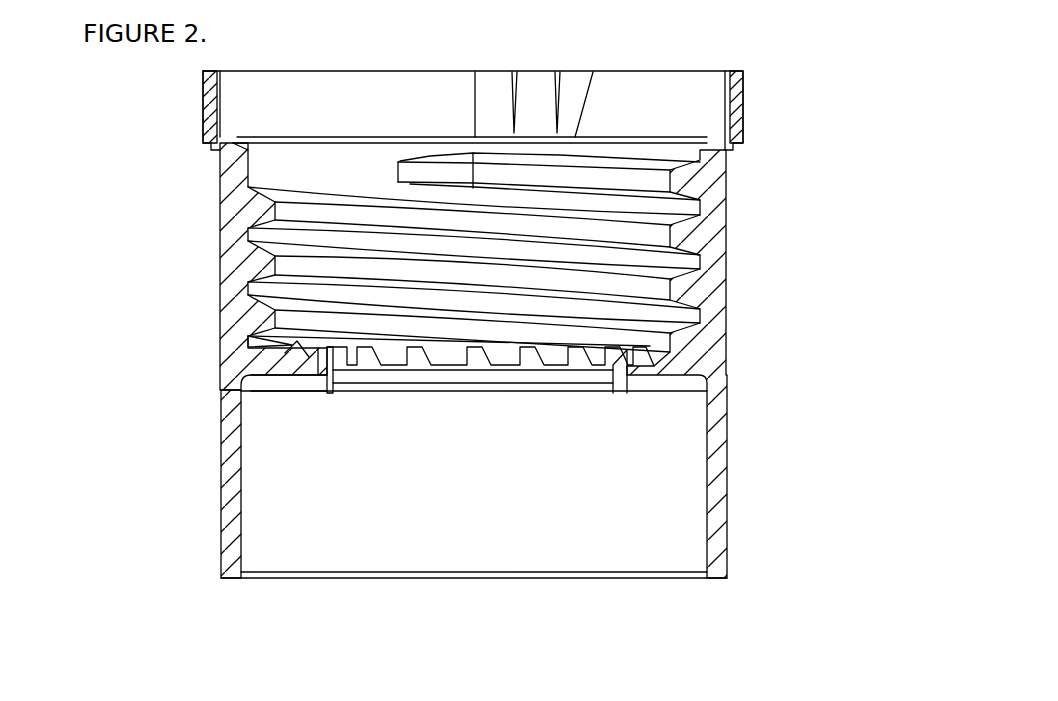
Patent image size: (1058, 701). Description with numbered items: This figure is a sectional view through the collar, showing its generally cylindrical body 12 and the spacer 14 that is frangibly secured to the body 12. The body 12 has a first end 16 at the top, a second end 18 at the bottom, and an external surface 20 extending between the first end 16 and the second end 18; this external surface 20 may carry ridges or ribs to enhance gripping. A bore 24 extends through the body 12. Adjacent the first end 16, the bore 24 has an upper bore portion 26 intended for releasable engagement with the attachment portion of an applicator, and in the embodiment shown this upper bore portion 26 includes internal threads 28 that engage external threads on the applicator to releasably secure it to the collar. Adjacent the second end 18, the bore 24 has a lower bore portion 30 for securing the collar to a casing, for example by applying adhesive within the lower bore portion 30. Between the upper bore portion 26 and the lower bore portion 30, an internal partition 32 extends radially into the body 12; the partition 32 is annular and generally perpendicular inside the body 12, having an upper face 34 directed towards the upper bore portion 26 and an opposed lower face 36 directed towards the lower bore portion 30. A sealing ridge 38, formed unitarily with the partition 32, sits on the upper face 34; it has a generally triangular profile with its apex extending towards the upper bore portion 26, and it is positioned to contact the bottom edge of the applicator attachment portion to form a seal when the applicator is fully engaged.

The body 12 is at (714, 296).
The spacer 14 is at (212, 102).
The first end 16 is at (707, 134).
The second end 18 is at (697, 582).
The external surface 20 is at (739, 350).
The bore 24 is at (495, 530).
The upper bore portion 26 is at (190, 145).
The internal threads 28 is at (640, 258).
The lower bore portion 30 is at (202, 382).
The internal partition 32 is at (262, 372).
The upper face 34 is at (660, 344).
The lower face 36 is at (655, 375).
The sealing ridge 38 is at (260, 348).